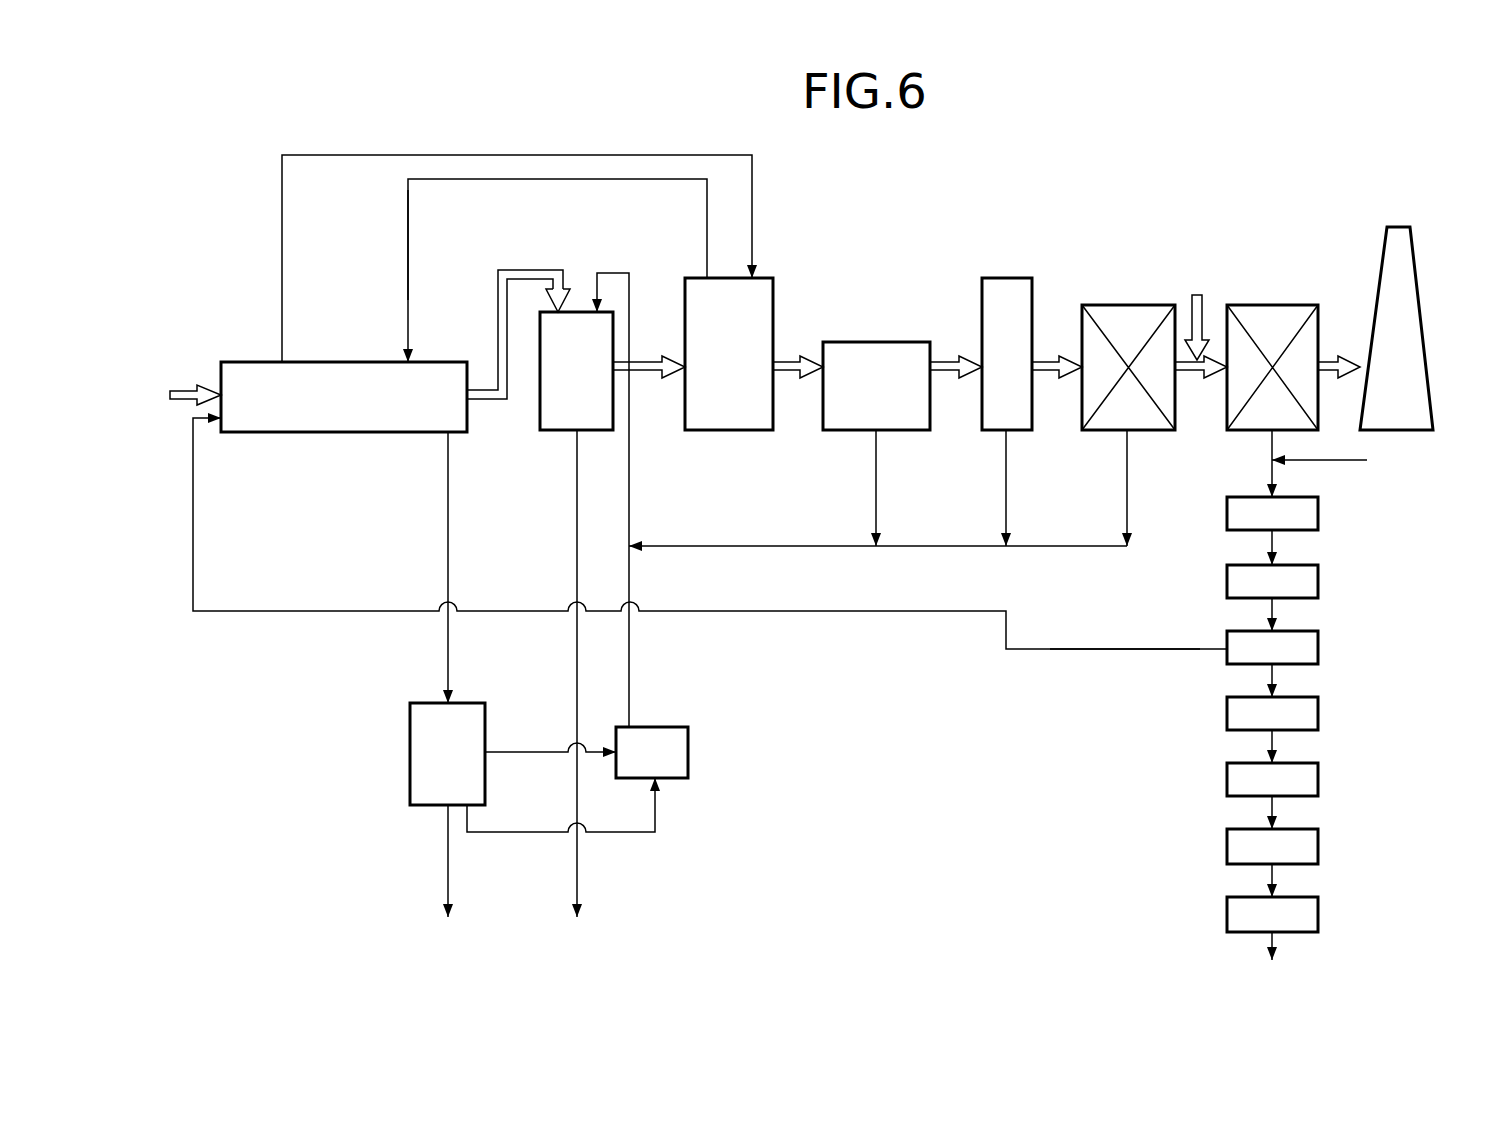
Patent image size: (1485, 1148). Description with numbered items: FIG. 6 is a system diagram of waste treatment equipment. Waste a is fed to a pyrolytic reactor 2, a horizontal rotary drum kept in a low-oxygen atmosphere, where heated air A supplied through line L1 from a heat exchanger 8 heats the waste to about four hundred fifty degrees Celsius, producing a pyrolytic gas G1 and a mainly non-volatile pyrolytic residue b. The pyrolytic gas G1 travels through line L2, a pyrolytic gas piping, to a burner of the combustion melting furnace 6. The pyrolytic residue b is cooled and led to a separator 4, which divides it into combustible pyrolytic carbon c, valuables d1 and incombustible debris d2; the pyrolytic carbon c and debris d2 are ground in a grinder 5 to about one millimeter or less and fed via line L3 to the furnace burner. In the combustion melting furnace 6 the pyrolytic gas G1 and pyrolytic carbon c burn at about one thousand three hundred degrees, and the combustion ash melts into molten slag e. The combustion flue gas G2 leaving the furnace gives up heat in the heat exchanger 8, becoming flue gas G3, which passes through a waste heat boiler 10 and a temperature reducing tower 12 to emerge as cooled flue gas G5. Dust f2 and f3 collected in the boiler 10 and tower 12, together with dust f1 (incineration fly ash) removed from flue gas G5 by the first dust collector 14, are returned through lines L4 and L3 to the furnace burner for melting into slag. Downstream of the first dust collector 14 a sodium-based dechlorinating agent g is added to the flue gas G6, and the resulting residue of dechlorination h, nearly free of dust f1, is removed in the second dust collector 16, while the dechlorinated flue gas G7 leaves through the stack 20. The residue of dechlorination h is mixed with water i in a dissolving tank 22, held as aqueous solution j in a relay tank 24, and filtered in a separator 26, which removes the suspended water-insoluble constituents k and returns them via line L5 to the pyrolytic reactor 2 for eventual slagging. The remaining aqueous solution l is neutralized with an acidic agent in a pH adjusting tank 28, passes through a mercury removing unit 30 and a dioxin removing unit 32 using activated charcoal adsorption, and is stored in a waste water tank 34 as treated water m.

The pyrolytic reactor 2 is at (345, 362).
The separator 4 is at (410, 752).
The grinder 5 is at (688, 752).
The combustion melting furnace 6 is at (545, 432).
The heat exchanger 8 is at (773, 305).
The waste heat boiler 10 is at (880, 342).
The temperature reducing tower 12 is at (1008, 278).
The first dust collector 14 is at (1130, 305).
The second dust collector 16 is at (1273, 305).
The stack 20 is at (1419, 305).
The dissolving tank 22 is at (1318, 513).
The relay tank 24 is at (1318, 582).
The separator 26 is at (1318, 648).
The pH adjusting tank 28 is at (1318, 713).
The mercury removing unit 30 is at (1318, 780).
The dioxin removing unit 32 is at (1318, 846).
The waste water tank 34 is at (1318, 913).
The heated air A is at (408, 205).
The line L1 is at (637, 179).
The line L2 is at (497, 316).
The line L3 is at (629, 665).
The line L4 is at (757, 546).
The line L5 is at (757, 612).
The pyrolytic gas G1 is at (562, 284).
The combustion flue gas G2 is at (655, 374).
The flue gas G3 is at (797, 374).
The flue gas G5 is at (953, 374).
The flue gas G6 is at (1195, 374).
The dechlorinated flue gas G7 is at (1340, 374).
The waste a is at (190, 388).
The pyrolytic residue b is at (448, 485).
The pyrolytic carbon c is at (527, 752).
The valuables d1 is at (448, 868).
The debris d2 is at (655, 815).
The molten slag e is at (577, 868).
The dust f1 is at (1127, 485).
The dust f2 is at (876, 485).
The dust f3 is at (1006, 485).
The sodium-based dechlorinating agent g is at (1204, 318).
The residue of dechlorination h is at (1271, 447).
The water i is at (1355, 461).
The aqueous solution j is at (1272, 540).
The water-insoluble constituents k is at (1117, 649).
The aqueous solution l is at (1272, 672).
The treated water m is at (1272, 940).